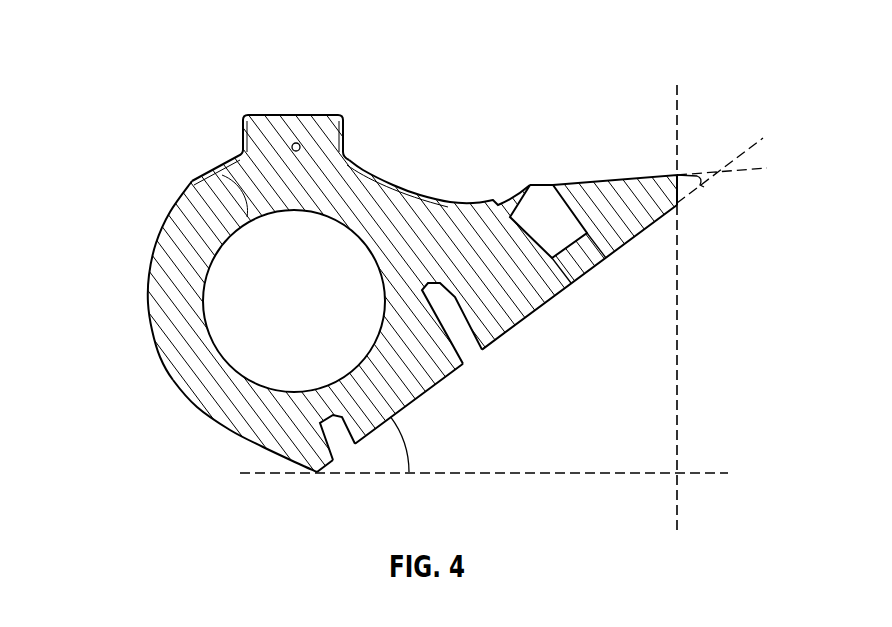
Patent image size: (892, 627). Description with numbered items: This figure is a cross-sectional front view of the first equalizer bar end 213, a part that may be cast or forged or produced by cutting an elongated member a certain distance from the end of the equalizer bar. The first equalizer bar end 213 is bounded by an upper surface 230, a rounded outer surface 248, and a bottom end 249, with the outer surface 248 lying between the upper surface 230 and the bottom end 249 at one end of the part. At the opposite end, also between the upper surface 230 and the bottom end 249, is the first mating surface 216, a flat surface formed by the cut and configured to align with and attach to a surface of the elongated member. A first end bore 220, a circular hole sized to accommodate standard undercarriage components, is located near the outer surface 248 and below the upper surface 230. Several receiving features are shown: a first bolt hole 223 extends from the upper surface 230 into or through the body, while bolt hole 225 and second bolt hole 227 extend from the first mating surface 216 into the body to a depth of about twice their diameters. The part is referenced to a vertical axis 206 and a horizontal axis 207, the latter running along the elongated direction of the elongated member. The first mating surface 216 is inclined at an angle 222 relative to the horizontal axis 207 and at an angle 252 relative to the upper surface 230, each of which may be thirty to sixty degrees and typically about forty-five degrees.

The first equalizer bar end 213 is at (152, 270).
The first end bore 220 is at (222, 175).
The outer surface 248 is at (150, 335).
The bottom end 249 is at (315, 473).
The first mating surface 216 is at (545, 302).
The bolt hole 225 is at (470, 348).
The second bolt hole 227 is at (343, 440).
The first bolt hole 223 is at (542, 208).
The upper surface 230 is at (603, 178).
The angle 252 is at (676, 175).
The angle 222 is at (407, 443).
The horizontal axis 207 is at (708, 473).
The vertical axis 206 is at (675, 527).